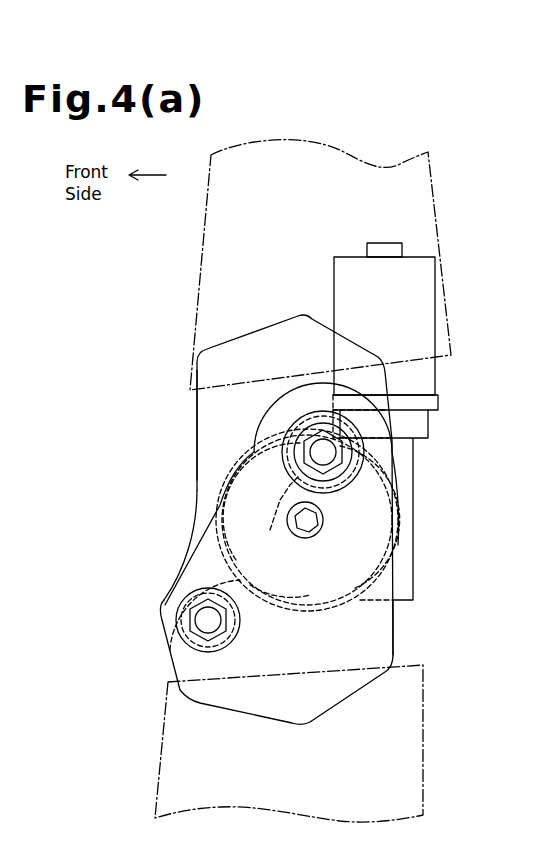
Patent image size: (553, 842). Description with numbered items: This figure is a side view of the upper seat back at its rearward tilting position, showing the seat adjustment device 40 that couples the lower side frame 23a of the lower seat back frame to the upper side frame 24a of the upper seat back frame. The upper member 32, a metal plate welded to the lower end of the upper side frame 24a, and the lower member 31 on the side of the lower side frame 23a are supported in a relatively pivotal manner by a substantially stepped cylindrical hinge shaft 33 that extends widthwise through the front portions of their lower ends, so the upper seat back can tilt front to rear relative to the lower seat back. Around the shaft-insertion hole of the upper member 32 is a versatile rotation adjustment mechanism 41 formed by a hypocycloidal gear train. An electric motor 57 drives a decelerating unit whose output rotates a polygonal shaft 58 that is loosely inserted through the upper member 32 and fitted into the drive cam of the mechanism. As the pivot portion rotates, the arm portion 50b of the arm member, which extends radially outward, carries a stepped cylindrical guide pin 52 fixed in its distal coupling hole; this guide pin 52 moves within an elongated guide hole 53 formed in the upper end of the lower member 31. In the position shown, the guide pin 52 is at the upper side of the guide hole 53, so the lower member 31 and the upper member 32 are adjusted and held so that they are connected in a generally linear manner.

The upper side frame 24a is at (433, 200).
The lower side frame 23a is at (424, 710).
The electric motor 57 is at (437, 300).
The seat adjustment device 40 is at (214, 432).
The upper member 32 is at (200, 446).
The lower member 31 is at (389, 625).
The rotation adjustment mechanism 41 is at (222, 482).
The arm portion 50b is at (350, 456).
The guide pin 52 is at (328, 455).
The guide hole 53 is at (281, 476).
The polygonal shaft 58 is at (300, 537).
The hinge shaft 33 is at (203, 620).